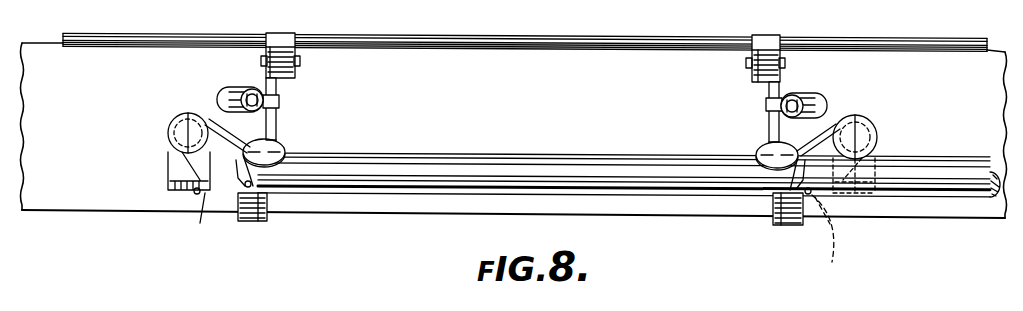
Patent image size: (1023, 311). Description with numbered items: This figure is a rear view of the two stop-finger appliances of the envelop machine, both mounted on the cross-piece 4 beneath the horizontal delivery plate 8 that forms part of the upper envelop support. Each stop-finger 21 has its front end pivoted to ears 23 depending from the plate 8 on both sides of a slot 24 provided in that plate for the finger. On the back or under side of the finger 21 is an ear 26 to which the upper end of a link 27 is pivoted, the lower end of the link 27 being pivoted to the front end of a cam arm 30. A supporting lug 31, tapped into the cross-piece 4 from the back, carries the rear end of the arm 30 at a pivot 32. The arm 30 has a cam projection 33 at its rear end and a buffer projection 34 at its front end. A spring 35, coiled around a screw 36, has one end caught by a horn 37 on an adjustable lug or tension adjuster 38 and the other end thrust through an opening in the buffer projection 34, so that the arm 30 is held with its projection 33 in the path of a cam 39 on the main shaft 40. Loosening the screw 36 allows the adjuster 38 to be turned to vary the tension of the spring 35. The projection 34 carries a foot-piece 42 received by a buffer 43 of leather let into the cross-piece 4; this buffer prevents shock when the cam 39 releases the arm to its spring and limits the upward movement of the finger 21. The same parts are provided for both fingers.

The cross-piece 4 is at (514, 130).
The horizontal delivery plate 8 is at (555, 20).
The stop-finger 21 is at (296, 72).
The ears 23 is at (262, 60).
The slot 24 is at (282, 42).
The ear 26 is at (265, 64).
The link 27 is at (277, 125).
The cam arm 30 is at (279, 95).
The supporting lug 31 is at (217, 97).
The pivot 32 is at (222, 104).
The cam projection 33 is at (807, 12).
The buffer projection 34 is at (268, 203).
The spring 35 is at (234, 156).
The screw 36 is at (168, 137).
The horn 37 is at (203, 218).
The adjustable lug 38 is at (180, 170).
The cam 39 is at (768, 167).
The main shaft 40 is at (600, 173).
The foot-piece 42 is at (249, 221).
The buffer 43 is at (245, 186).